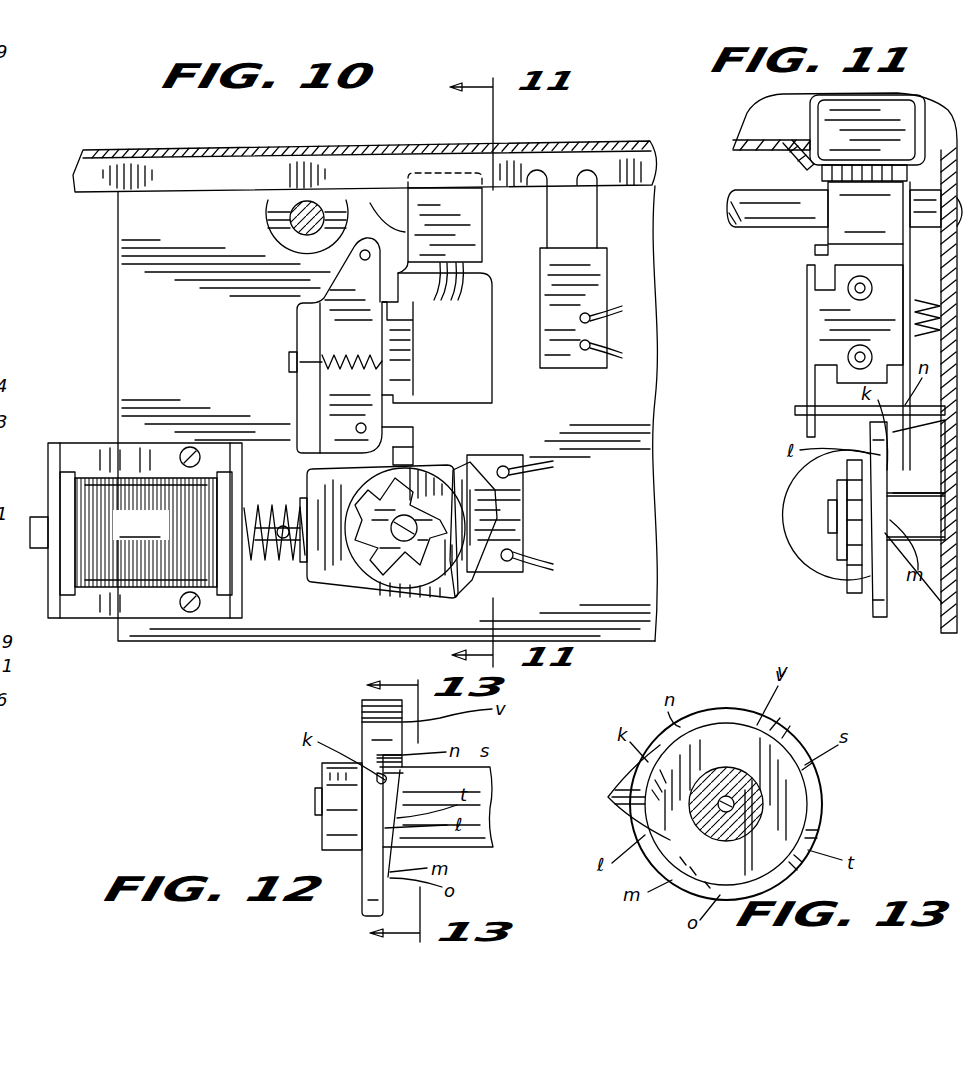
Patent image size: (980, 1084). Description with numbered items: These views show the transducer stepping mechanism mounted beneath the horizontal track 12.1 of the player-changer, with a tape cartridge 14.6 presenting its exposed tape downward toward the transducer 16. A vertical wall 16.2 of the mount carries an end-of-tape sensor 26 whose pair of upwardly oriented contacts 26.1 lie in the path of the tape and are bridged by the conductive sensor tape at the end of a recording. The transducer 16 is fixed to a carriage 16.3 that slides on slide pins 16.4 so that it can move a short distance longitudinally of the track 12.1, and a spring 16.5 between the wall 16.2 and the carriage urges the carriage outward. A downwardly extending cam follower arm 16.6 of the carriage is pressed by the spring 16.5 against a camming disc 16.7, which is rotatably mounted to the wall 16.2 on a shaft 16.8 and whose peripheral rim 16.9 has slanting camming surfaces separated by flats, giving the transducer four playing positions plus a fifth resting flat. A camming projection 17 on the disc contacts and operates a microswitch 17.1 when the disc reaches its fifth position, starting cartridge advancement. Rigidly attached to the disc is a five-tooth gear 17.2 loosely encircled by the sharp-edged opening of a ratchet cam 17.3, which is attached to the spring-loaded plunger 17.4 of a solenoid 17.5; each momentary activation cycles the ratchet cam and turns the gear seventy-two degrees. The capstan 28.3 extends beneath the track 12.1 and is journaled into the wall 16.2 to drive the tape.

In FIG. 10, the track 12.1 is at (133, 149).
In FIG. 11, the track 12.1 is at (845, 363).
In FIG. 11, the tape cartridge 14.6 is at (878, 128).
In FIG. 10, the transducer 16 is at (445, 200).
In FIG. 11, the transducer 16 is at (895, 326).
In FIG. 10, the vertical wall 16.2 is at (148, 220).
In FIG. 10, the carriage 16.3 is at (480, 359).
In FIG. 11, the carriage 16.3 is at (835, 325).
In FIG. 10, the slide pins 16.4 is at (360, 250).
In FIG. 11, the slide pins 16.4 is at (815, 252).
In FIG. 11, the spring 16.5 is at (930, 300).
In FIG. 10, the cam follower arm 16.6 is at (417, 454).
In FIG. 11, the cam follower arm 16.6 is at (924, 456).
In FIG. 10, the camming disc 16.7 is at (418, 566).
In FIG. 11, the camming disc 16.7 is at (873, 598).
In FIG. 12, the camming disc 16.7 is at (362, 720).
In FIG. 13, the camming disc 16.7 is at (838, 790).
In FIG. 11, the shaft 16.8 is at (945, 527).
In FIG. 12, the shaft 16.8 is at (477, 790).
In FIG. 13, the shaft 16.8 is at (745, 773).
In FIG. 12, the peripheral rim 16.9 is at (403, 741).
In FIG. 13, the peripheral rim 16.9 is at (820, 830).
In FIG. 10, the camming projection 17 is at (474, 460).
In FIG. 12, the camming projection 17 is at (402, 802).
In FIG. 13, the camming projection 17 is at (612, 793).
In FIG. 10, the microswitch 17.1 is at (508, 513).
In FIG. 10, the toothed gear 17.2 is at (398, 554).
In FIG. 11, the toothed gear 17.2 is at (843, 543).
In FIG. 12, the toothed gear 17.2 is at (343, 858).
In FIG. 10, the ratchet cam 17.3 is at (345, 566).
In FIG. 11, the ratchet cam 17.3 is at (847, 588).
In FIG. 10, the spring-loaded plunger 17.4 is at (290, 562).
In FIG. 11, the spring-loaded plunger 17.4 is at (832, 502).
In FIG. 10, the solenoid 17.5 is at (136, 530).
In FIG. 11, the solenoid 17.5 is at (808, 480).
In FIG. 10, the end-of-tape sensor 26 is at (590, 288).
In FIG. 10, the contacts 26.1 is at (598, 210).
In FIG. 10, the capstan 28.3 is at (308, 205).
In FIG. 11, the capstan 28.3 is at (762, 205).